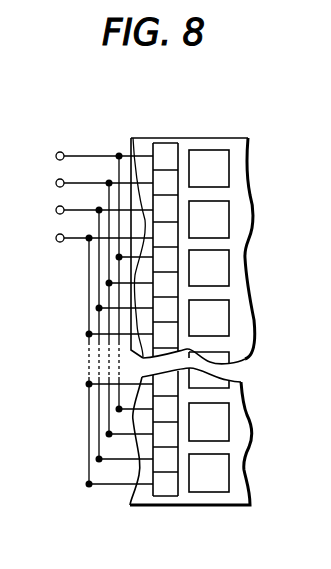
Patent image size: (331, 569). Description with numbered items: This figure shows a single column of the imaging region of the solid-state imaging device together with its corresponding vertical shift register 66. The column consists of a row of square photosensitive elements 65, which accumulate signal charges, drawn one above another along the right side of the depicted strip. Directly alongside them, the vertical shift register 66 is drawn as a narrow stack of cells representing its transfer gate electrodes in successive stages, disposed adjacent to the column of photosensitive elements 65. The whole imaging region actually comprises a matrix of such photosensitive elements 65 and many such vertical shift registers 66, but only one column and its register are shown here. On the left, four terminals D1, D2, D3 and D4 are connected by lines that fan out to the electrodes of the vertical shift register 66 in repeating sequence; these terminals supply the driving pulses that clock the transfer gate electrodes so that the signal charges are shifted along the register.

The photosensitive elements 65 is at (211, 161).
The vertical shift register 66 is at (163, 158).
The terminal D1 is at (88, 279).
The terminal D2 is at (88, 305).
The terminal D3 is at (88, 331).
The terminal D4 is at (88, 357).